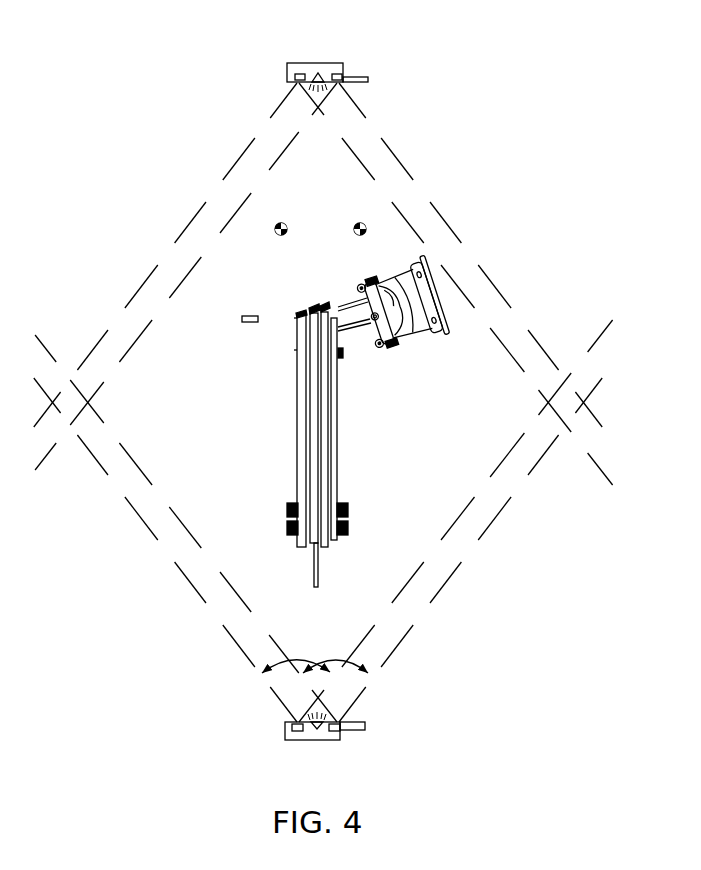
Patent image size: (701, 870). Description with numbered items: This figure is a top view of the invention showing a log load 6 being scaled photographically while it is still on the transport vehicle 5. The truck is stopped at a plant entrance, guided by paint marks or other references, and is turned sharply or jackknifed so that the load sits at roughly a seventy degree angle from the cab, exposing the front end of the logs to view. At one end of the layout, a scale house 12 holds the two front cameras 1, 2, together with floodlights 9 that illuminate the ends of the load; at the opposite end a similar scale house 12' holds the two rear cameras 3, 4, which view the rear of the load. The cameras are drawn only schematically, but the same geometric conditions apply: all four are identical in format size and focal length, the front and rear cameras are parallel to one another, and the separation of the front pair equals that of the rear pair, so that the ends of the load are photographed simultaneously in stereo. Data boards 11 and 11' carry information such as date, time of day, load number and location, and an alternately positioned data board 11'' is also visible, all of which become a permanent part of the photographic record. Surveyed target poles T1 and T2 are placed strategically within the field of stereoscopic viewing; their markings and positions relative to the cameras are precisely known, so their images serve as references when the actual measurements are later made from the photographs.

The scale house 12 is at (344, 46).
The data board 11 is at (383, 62).
The floodlights 9 is at (292, 67).
The camera 2 is at (270, 93).
The camera 1 is at (370, 93).
The surveyed target pole T2 is at (257, 242).
The surveyed target pole T1 is at (388, 242).
The alternately positioned data board 11'' is at (222, 332).
The logging truck 5 is at (416, 312).
The log load 6 is at (355, 444).
The scale house 12' is at (345, 754).
The data board 11' is at (381, 742).
The camera 4 is at (264, 709).
The camera 3 is at (370, 709).